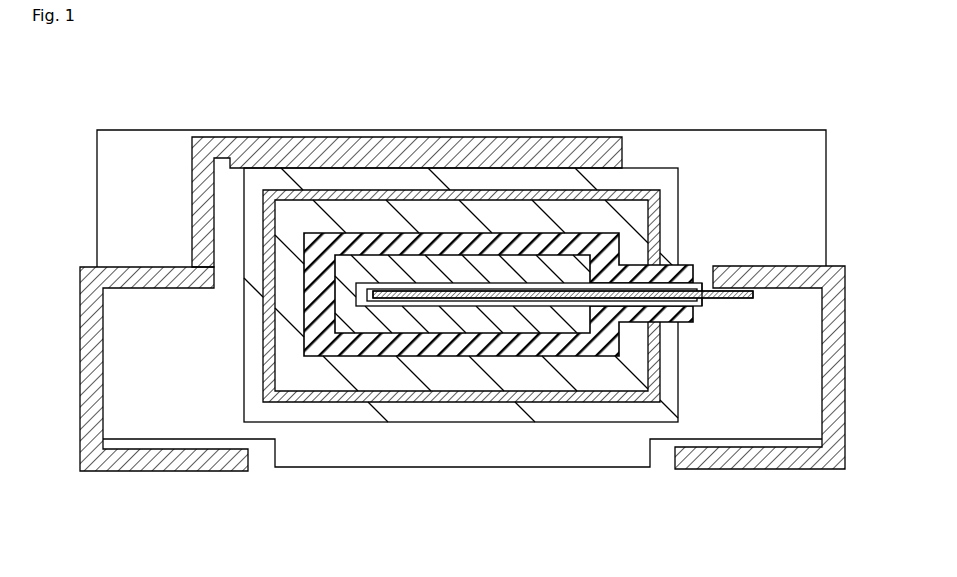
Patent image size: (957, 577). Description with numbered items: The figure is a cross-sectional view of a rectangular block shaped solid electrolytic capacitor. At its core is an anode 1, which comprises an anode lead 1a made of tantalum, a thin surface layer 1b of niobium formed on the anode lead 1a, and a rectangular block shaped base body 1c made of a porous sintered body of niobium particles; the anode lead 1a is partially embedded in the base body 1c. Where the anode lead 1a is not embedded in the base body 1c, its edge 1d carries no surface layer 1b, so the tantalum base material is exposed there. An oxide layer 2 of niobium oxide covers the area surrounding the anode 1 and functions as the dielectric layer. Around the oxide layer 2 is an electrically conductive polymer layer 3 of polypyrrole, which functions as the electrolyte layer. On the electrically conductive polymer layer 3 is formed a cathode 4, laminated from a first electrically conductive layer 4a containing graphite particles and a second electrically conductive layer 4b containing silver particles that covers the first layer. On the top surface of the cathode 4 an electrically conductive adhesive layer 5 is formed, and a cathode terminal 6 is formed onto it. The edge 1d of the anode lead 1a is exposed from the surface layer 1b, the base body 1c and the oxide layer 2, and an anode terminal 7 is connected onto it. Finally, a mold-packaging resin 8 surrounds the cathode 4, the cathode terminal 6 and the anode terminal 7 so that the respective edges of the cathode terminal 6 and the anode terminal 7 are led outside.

The anode 1 is at (571, 170).
The anode lead 1a is at (707, 287).
The surface layer 1b is at (560, 287).
The base body 1c is at (493, 263).
The edge 1d is at (738, 266).
The oxide layer 2 is at (385, 243).
The electrically conductive polymer layer 3 is at (462, 382).
The cathode 4 is at (461, 366).
The first electrically conductive layer 4a is at (557, 395).
The second electrically conductive layer 4b is at (610, 415).
The electrically conductive adhesive layer 5 is at (287, 168).
The cathode terminal 6 is at (213, 471).
The anode terminal 7 is at (765, 469).
The mold-packaging resin 8 is at (153, 148).